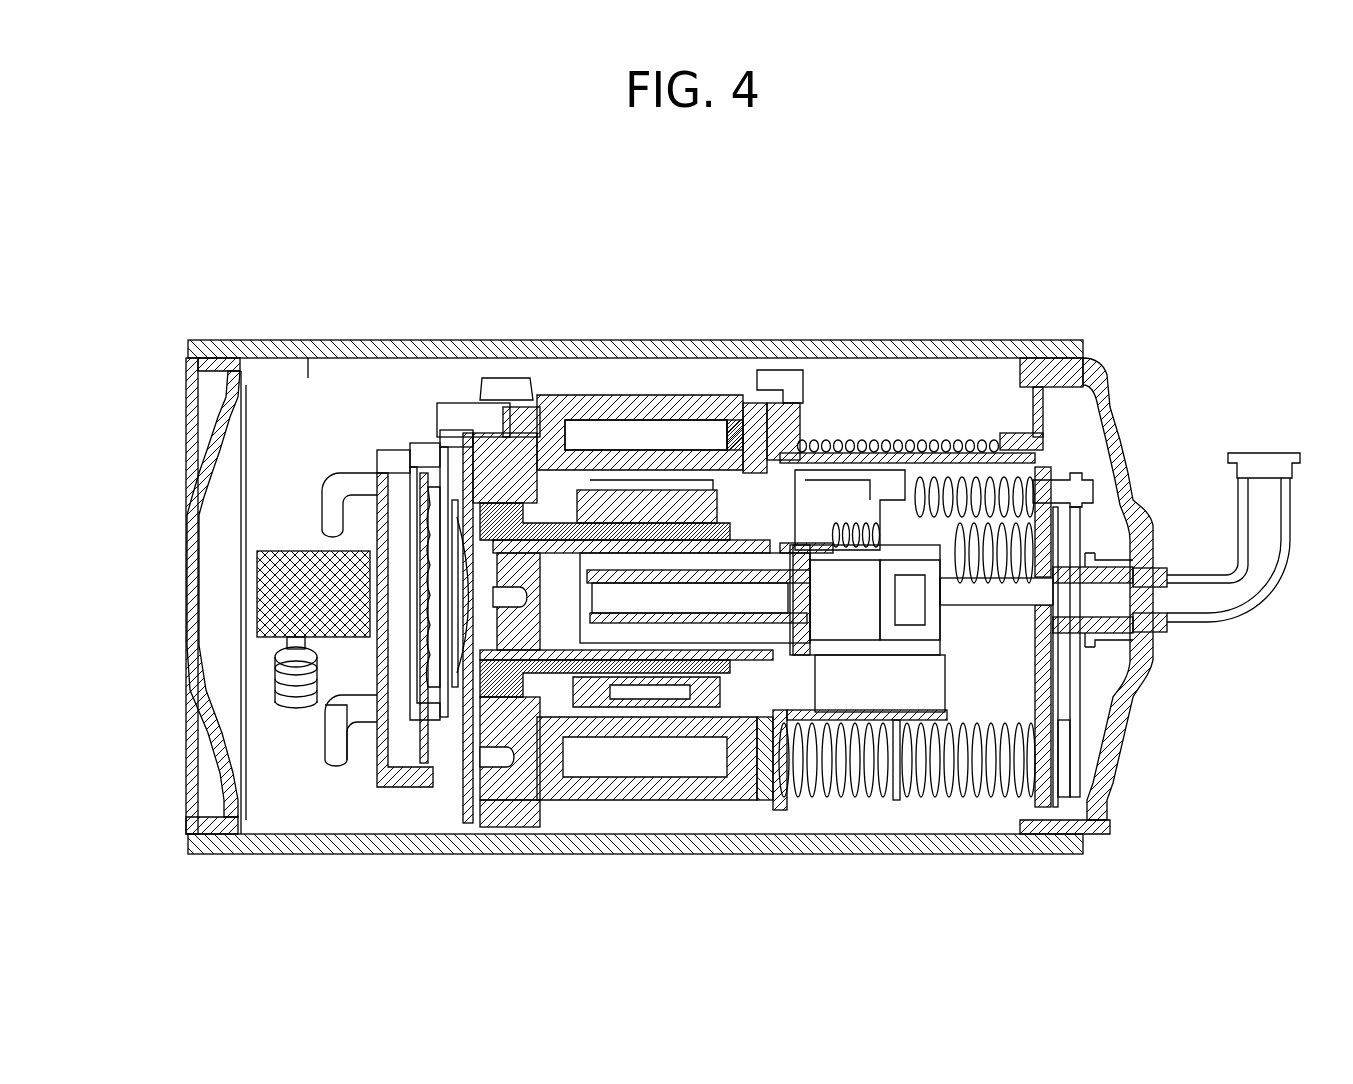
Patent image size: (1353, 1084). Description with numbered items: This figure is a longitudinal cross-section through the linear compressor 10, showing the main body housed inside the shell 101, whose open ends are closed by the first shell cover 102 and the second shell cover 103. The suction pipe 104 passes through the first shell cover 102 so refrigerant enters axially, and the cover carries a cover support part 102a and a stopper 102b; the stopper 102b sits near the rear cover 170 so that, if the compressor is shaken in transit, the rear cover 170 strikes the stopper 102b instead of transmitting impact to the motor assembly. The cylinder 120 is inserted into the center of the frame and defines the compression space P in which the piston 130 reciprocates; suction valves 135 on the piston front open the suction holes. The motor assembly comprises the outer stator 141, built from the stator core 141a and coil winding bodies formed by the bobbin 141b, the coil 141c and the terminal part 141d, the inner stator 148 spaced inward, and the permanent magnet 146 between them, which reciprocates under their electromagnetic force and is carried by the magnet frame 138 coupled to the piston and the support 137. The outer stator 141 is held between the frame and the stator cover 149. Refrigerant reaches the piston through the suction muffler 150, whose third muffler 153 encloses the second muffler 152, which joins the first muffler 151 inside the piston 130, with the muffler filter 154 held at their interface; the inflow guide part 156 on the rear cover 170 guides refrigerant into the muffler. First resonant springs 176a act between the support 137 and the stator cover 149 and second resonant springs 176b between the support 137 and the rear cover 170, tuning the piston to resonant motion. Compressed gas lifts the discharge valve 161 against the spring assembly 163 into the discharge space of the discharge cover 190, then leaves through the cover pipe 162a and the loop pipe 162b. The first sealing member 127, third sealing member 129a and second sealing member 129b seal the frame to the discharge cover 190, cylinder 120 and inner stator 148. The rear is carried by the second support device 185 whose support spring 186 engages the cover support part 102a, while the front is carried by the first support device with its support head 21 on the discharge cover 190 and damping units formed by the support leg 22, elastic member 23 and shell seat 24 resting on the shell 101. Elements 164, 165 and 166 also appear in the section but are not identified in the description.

The linear compressor 10 is at (666, 232).
The shell 101 is at (925, 340).
The first shell cover 102 is at (1112, 382).
The cover support part 102a is at (1132, 556).
The stopper 102b is at (1045, 372).
The second shell cover 103 is at (215, 456).
The suction pipe 104 is at (1253, 598).
The cylinder 120 is at (612, 778).
The first sealing member 127 is at (466, 660).
The third sealing member 129a is at (699, 530).
The second sealing member 129b is at (700, 665).
The piston 130 is at (650, 708).
The suction valve 135 is at (500, 792).
The support 137 is at (855, 470).
The magnet frame 138 is at (760, 410).
The outer stator 141 is at (561, 395).
The stator core 141a is at (745, 440).
The bobbin 141b is at (600, 460).
The coil 141c is at (700, 430).
The terminal part 141d is at (467, 418).
The permanent magnet 146 is at (640, 430).
The inner stator 148 is at (680, 460).
The stator cover 149 is at (795, 395).
The suction muffler 150 is at (931, 680).
The first muffler 151 is at (745, 625).
The second muffler 152 is at (830, 647).
The third muffler 153 is at (905, 652).
The muffler filter 154 is at (1060, 750).
The inflow guide part 156 is at (1042, 668).
The discharge valve 161 is at (285, 705).
The cover pipe 162a is at (348, 480).
The loop pipe 162b is at (335, 772).
The spring assembly 163 is at (447, 700).
The discharge cover bellows 164 is at (455, 568).
The support plate 165 is at (258, 384).
The support plate fastening portion 166 is at (308, 340).
The rear cover 170 is at (960, 440).
The first resonant springs 176a is at (855, 800).
The second resonant springs 176b is at (975, 800).
The second support device 185 is at (1105, 470).
The support spring 186 is at (1150, 650).
The discharge cover 190 is at (393, 450).
The support head 21 is at (430, 626).
The support leg 22 is at (372, 640).
The elastic member 23 is at (300, 690).
The shell seat 24 is at (340, 730).
The compression space P is at (470, 560).